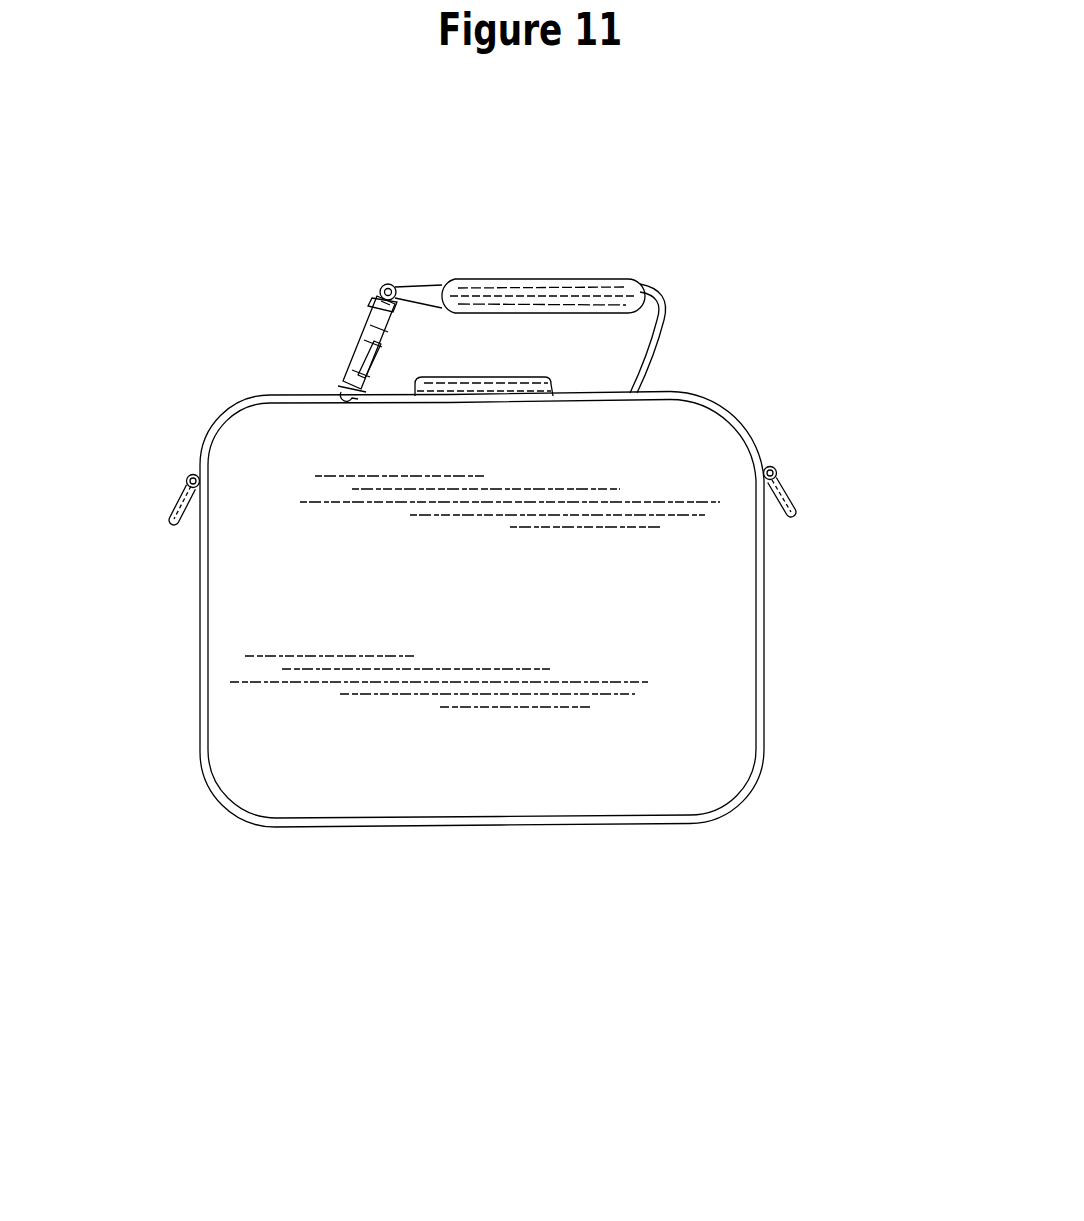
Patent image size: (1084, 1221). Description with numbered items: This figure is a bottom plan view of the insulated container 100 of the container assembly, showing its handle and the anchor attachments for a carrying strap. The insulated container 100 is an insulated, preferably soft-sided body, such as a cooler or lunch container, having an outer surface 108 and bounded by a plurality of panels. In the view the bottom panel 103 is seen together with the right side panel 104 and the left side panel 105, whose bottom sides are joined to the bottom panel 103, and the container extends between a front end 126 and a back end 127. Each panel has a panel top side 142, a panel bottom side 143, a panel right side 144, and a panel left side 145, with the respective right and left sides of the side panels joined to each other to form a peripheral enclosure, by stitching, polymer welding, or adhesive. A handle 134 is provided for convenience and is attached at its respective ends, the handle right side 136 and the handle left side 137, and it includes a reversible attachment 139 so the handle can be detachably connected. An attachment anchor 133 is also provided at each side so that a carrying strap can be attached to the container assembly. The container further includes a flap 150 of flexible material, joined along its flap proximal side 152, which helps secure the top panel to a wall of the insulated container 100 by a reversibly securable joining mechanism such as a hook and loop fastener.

The insulated container 100 is at (648, 971).
The bottom panel 103 is at (685, 582).
The right side panel 104 is at (203, 613).
The left side panel 105 is at (765, 636).
The outer surface 108 is at (655, 727).
The front end 126 is at (305, 393).
The back end 127 is at (428, 825).
The attachment anchor 133 is at (185, 507).
The handle 134 is at (533, 280).
The handle right side 136 is at (367, 322).
The handle left side 137 is at (667, 325).
The handle reversible attachment 139 is at (362, 362).
The panel top side 142 is at (660, 398).
The panel bottom side 143 is at (588, 820).
The panel right side 144 is at (210, 677).
The panel left side 145 is at (760, 548).
The flap 150 is at (497, 378).
The flap proximal side 152 is at (467, 385).